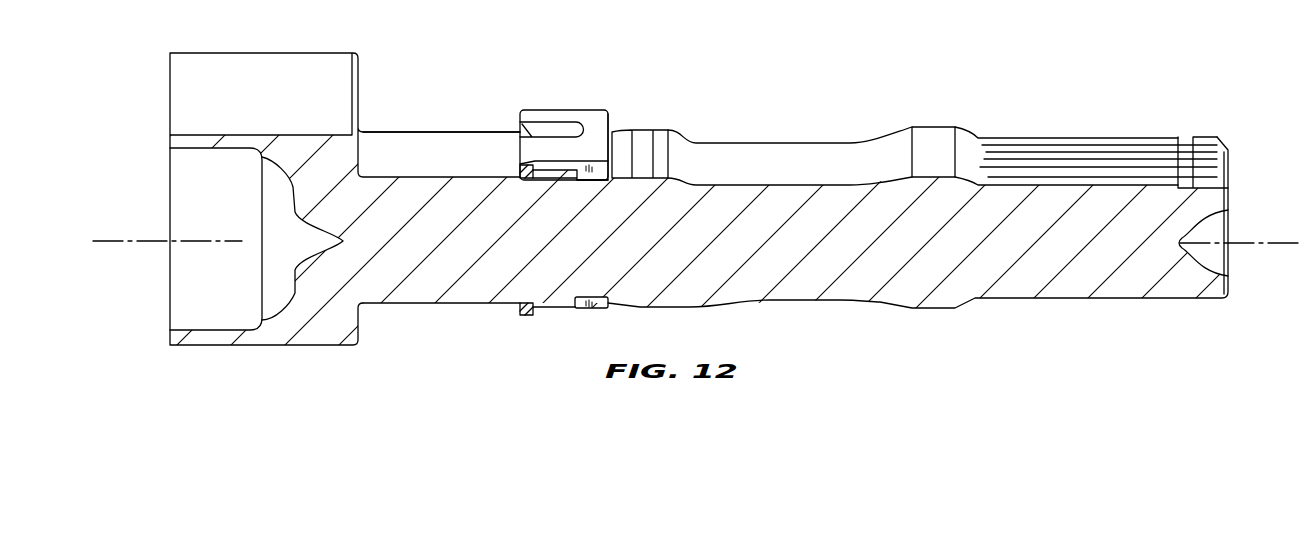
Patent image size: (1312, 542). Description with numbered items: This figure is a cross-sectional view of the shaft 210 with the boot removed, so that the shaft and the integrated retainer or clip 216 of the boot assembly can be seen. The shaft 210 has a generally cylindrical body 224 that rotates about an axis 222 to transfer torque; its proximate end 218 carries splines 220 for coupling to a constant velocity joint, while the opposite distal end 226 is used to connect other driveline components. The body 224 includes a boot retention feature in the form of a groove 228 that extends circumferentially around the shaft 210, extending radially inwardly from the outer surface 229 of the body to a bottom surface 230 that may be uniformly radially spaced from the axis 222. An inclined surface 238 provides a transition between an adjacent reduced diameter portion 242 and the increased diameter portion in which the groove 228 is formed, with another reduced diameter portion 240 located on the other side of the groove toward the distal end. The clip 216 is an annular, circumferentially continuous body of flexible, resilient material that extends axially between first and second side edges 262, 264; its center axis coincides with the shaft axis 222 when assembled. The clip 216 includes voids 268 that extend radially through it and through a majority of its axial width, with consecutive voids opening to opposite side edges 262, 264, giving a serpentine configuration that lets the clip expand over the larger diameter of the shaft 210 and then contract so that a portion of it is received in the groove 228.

The shaft 210 is at (405, 112).
The clip 216 is at (578, 106).
The proximate end 218 is at (1230, 169).
The splines 220 is at (1090, 140).
The axis 222 is at (93, 242).
The body 224 is at (855, 298).
The distal end 226 is at (170, 80).
The groove 228 is at (612, 192).
The outer surface 229 is at (556, 309).
The bottom surface 230 is at (575, 183).
The inclined surface 238 is at (641, 140).
The reduced diameter portion 240 is at (456, 131).
The reduced diameter portion 242 is at (778, 153).
The first side edge 262 is at (520, 160).
The second side edge 264 is at (612, 114).
The voids 268 is at (518, 140).